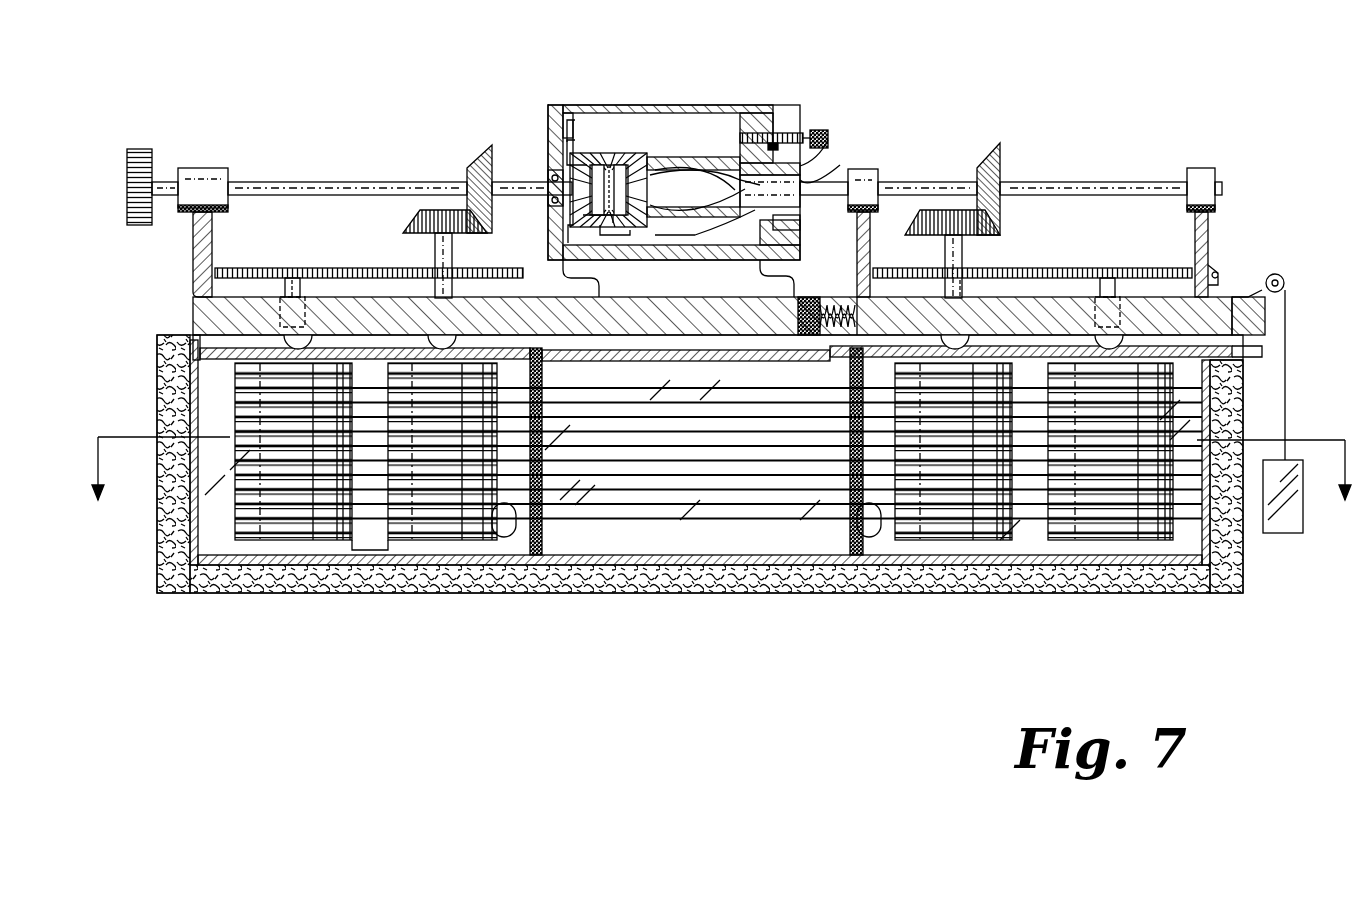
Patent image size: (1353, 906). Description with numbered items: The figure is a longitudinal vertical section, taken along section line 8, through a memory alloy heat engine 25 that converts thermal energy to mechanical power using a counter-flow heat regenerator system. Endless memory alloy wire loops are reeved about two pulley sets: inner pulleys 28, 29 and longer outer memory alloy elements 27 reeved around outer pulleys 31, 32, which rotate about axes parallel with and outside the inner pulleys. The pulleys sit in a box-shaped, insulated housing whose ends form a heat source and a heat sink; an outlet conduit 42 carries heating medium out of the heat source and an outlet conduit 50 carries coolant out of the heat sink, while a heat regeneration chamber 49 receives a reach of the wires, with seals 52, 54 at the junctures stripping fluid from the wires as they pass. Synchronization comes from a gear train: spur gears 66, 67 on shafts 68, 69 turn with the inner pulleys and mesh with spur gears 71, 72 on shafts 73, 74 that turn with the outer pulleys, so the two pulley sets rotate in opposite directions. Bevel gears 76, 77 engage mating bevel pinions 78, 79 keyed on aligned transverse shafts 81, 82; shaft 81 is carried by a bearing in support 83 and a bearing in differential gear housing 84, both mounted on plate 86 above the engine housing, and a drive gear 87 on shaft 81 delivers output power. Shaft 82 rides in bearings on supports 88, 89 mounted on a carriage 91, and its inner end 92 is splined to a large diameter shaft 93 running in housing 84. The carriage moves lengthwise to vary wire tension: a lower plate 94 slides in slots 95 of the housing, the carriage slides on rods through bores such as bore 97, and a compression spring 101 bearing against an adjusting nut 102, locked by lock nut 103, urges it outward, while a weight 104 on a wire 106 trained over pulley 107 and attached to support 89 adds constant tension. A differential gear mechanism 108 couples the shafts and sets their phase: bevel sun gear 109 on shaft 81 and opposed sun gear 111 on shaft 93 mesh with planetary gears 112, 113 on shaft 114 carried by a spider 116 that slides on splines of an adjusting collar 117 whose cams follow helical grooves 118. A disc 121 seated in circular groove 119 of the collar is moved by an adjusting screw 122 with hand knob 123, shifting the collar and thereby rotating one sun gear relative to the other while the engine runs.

The section line 8- 8 is at (710, 484).
The memory alloy heat engine 25 is at (470, 95).
The outer memory alloy elements 27 is at (372, 550).
The inner pulley 28 is at (430, 530).
The inner pulley 29 is at (950, 530).
The outer pulley 31 is at (288, 530).
The outer pulley 32 is at (1095, 530).
The outlet conduit 42 is at (890, 540).
The heat regeneration chamber 49 is at (680, 545).
The outlet conduit 50 is at (500, 540).
The seal 52 is at (536, 540).
The seal 54 is at (856, 540).
The spur gear 66 is at (488, 262).
The spur gear 67 is at (984, 248).
The shaft 68 is at (435, 280).
The shaft 69 is at (948, 287).
The spur gear 71 is at (308, 268).
The spur gear 72 is at (1050, 248).
The shaft 73 is at (287, 295).
The shaft 74 is at (1112, 300).
The bevel gear 76 is at (402, 225).
The bevel gear 77 is at (924, 220).
The bevel pinion 78 is at (467, 163).
The bevel pinion 79 is at (998, 146).
The transverse shaft 81 is at (253, 182).
The transverse shaft 82 is at (1107, 182).
The support 83 is at (192, 248).
The differential gear housing 84 is at (640, 105).
The plate 86 is at (193, 318).
The drive gear 87 is at (127, 177).
The support 88 is at (856, 245).
The support 89 is at (1212, 222).
The carriage 91 is at (855, 284).
The inner end of shaft 82 92 is at (870, 172).
The large diameter shaft 93 is at (833, 162).
The lower plate 94 is at (1195, 360).
The slots 95 is at (1270, 355).
The bore 97 is at (1223, 300).
The compression spring 101 is at (808, 337).
The adjusting nut 102 is at (815, 292).
The lock nut 103 is at (760, 265).
The weight 104 is at (1317, 532).
The wire 106 is at (1290, 395).
The pulley 107 is at (1300, 270).
The differential gear mechanism 108 is at (698, 130).
The bevel sun gear 109 is at (550, 171).
The bevel sun gear 111 is at (660, 157).
The planetary gear 112 is at (580, 240).
The planetary gear 113 is at (577, 155).
The shaft 114 is at (620, 215).
The spider 116 is at (618, 140).
The adjusting collar 117 is at (712, 176).
The helical grooves 118 is at (690, 208).
The circular groove 119 is at (778, 135).
The disc 121 is at (770, 135).
The adjusting screw 122 is at (828, 132).
The hand knob 123 is at (865, 147).